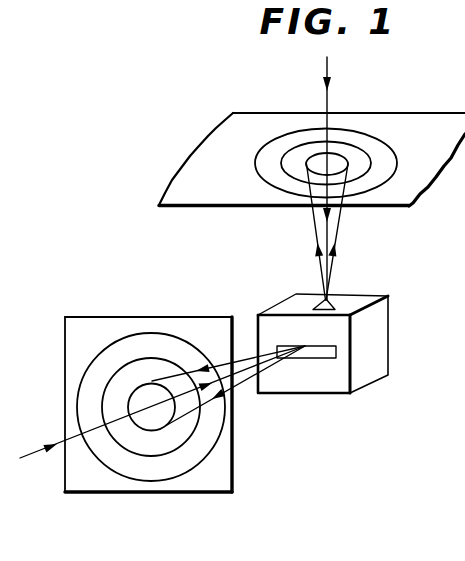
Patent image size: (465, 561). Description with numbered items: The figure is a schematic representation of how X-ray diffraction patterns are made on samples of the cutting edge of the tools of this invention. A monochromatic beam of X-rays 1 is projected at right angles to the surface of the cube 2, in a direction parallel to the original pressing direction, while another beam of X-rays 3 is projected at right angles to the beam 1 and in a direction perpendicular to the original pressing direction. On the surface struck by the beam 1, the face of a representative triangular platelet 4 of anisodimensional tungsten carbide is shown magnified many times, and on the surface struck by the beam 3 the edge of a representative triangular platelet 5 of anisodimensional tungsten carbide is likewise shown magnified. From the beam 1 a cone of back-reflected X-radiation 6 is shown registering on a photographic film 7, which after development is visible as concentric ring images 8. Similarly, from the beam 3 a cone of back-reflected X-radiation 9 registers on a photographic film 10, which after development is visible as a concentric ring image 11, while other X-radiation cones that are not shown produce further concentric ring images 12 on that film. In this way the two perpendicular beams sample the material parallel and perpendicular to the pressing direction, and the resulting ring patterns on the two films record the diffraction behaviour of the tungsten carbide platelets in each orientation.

The monochromatic beam of X-rays 1 is at (331, 72).
The cube 2 is at (380, 329).
The beam of X-rays 3 is at (47, 448).
The triangular platelet 4 is at (332, 305).
The triangular platelet 5 is at (305, 347).
The cone of back-reflected X-radiation 6 is at (312, 224).
The photographic film 7 is at (450, 113).
The concentric ring images 8 is at (308, 154).
The cone of back-reflected X-radiation 9 is at (172, 378).
The photographic film 10 is at (157, 493).
The concentric ring image 11 is at (135, 427).
The concentric ring images 12 is at (180, 445).